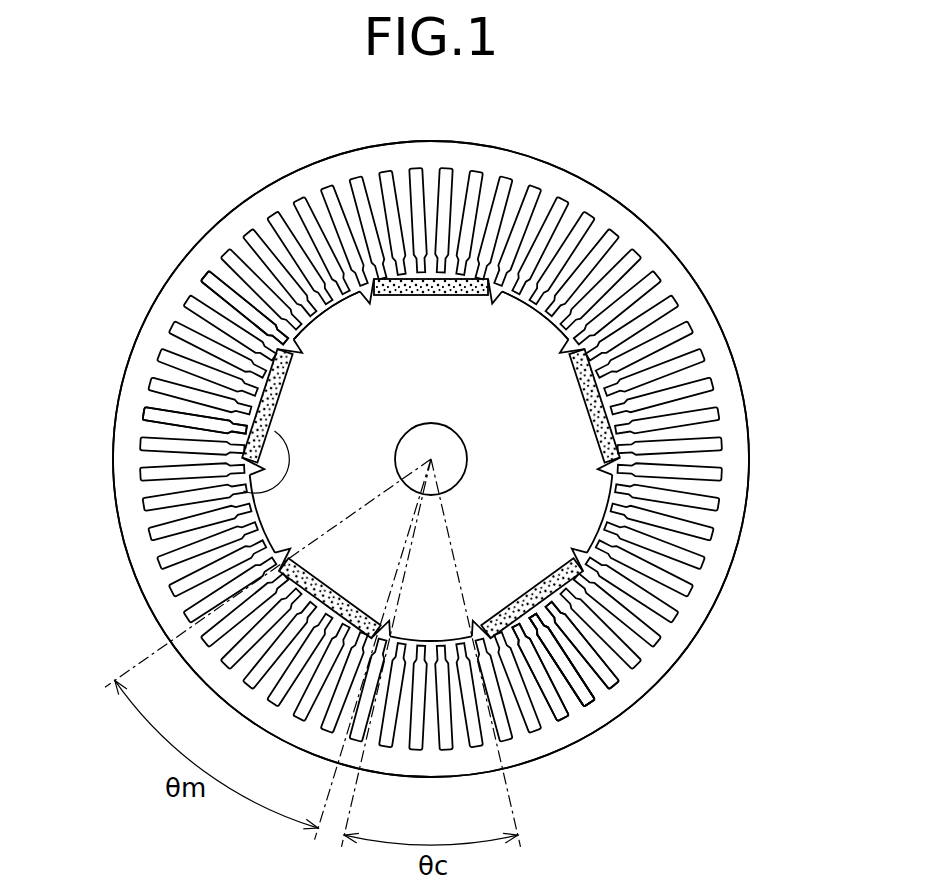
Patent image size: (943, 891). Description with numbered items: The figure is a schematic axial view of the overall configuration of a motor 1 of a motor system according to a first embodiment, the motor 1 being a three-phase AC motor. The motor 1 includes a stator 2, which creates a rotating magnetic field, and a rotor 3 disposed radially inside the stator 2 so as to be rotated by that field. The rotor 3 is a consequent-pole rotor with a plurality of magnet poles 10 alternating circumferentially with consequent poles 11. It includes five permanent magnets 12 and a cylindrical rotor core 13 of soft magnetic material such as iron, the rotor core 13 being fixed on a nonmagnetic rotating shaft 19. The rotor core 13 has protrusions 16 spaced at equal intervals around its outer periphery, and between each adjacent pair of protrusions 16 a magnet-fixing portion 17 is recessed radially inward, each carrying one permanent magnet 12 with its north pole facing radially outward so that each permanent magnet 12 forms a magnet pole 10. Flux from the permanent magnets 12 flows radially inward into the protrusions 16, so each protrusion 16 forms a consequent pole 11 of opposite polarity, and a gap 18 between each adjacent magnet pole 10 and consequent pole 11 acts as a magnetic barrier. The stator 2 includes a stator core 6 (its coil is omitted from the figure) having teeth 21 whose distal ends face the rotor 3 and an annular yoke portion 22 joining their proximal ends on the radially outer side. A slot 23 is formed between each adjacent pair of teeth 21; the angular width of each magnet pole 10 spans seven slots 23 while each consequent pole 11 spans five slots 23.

The motor 1 is at (719, 172).
The stator 2 is at (733, 312).
The rotor 3 is at (437, 405).
The stator core 6 is at (728, 393).
The magnet pole 10 is at (258, 387).
The consequent pole 11 is at (357, 310).
The permanent magnet 12 is at (175, 416).
The rotor core 13 is at (525, 332).
The protrusion 16 is at (325, 314).
The magnet-fixing portion 17 is at (243, 491).
The gap 18 is at (207, 277).
The rotating shaft 19 is at (442, 457).
The tooth 21 is at (577, 663).
The yoke portion 22 is at (600, 715).
The slot 23 is at (578, 703).